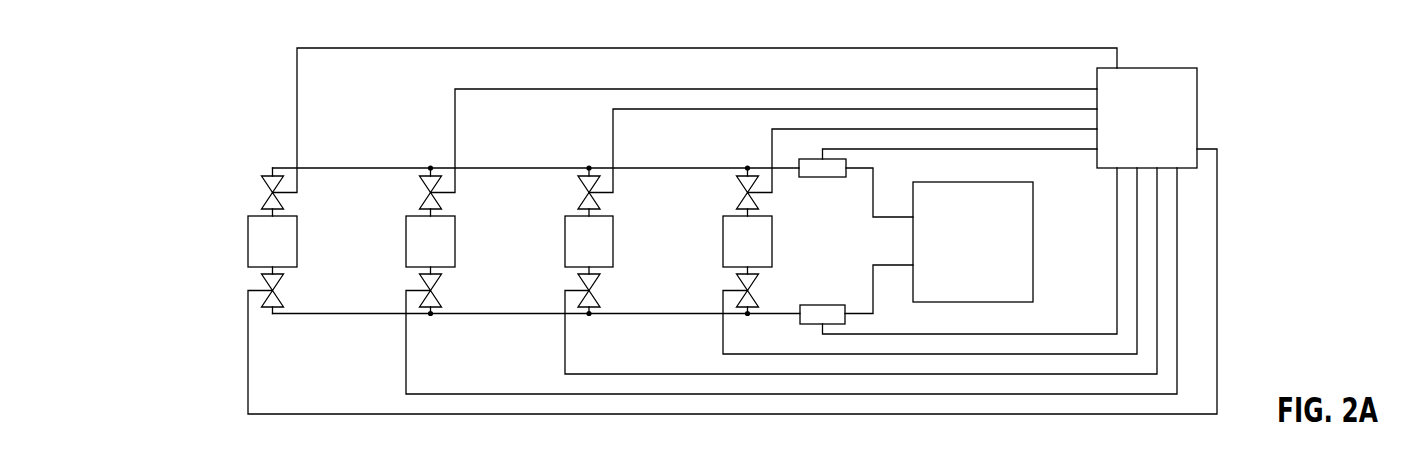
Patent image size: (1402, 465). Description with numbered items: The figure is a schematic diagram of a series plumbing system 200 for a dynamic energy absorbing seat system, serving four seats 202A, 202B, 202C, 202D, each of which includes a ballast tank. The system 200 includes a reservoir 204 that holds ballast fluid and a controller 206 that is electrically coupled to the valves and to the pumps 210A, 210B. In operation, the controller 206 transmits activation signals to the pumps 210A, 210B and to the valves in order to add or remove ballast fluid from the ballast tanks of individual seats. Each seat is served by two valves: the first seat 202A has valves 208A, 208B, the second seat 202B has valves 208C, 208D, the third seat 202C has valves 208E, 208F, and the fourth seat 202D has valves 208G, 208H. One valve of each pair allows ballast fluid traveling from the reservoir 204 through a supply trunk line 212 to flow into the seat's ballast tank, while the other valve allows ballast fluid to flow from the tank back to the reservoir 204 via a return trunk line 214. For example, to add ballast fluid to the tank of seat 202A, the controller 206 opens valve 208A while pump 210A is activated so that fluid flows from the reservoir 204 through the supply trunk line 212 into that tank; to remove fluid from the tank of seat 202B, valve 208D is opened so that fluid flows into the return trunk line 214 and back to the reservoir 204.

The series plumbing system 200 is at (203, 57).
The seat 202A is at (260, 242).
The seat 202B is at (415, 240).
The seat 202C is at (577, 242).
The seat 202D is at (735, 242).
The reservoir 204 is at (1017, 233).
The controller 206 is at (1185, 115).
The valve 208A is at (267, 187).
The valve 208B is at (263, 282).
The valve 208C is at (427, 203).
The valve 208D is at (427, 286).
The valve 208E is at (578, 205).
The valve 208F is at (578, 282).
The valve 208G is at (737, 205).
The valve 208H is at (742, 282).
The pump 210A is at (832, 170).
The pump 210B is at (800, 317).
The supply trunk line 212 is at (343, 167).
The return trunk line 214 is at (343, 318).